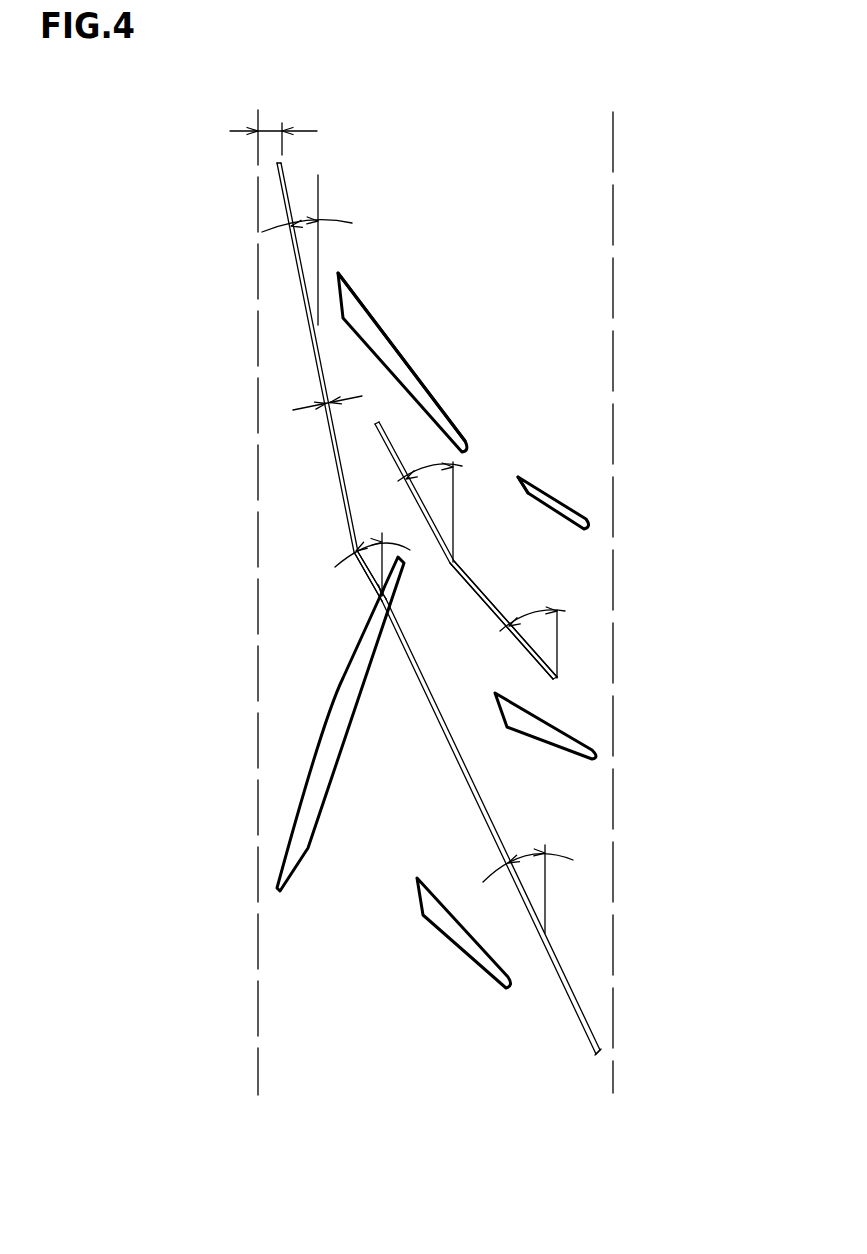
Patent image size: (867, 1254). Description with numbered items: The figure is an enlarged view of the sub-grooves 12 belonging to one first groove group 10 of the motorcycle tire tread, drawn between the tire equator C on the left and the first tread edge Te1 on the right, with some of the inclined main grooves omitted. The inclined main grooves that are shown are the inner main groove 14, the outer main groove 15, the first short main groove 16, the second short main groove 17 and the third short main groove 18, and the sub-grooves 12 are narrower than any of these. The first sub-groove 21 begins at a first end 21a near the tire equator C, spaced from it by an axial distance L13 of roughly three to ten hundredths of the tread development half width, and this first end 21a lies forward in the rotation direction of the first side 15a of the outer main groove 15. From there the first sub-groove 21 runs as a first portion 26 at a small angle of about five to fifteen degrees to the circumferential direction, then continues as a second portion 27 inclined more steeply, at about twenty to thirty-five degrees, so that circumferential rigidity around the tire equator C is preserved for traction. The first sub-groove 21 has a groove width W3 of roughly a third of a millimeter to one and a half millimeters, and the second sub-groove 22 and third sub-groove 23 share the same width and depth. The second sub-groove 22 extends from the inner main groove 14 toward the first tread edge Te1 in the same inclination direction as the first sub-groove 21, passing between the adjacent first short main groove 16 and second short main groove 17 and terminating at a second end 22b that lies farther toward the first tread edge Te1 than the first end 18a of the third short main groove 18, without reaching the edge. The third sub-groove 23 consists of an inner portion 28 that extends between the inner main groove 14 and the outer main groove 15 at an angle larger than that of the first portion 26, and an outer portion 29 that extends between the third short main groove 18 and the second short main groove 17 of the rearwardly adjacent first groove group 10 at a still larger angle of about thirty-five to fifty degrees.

The first groove group 10 is at (666, 611).
The sub-grooves 12 is at (286, 309).
The inner main groove 14 is at (328, 748).
The outer main groove 15 is at (375, 333).
The first side of outer main groove 15a is at (340, 272).
The first short main groove 16 is at (445, 915).
The second short main groove 17 is at (543, 732).
The third short main groove 18 is at (550, 500).
The first end of third short main groove 18a is at (516, 470).
The first sub-groove 21 is at (337, 468).
The first end of first sub-groove 21a is at (282, 162).
The second sub-groove 22 is at (488, 813).
The second end of second sub-groove 22b is at (600, 1053).
The third sub-groove 23 is at (392, 443).
The first portion 26 is at (254, 382).
The second portion 27 is at (367, 577).
The inner portion 28 is at (552, 482).
The outer portion 29 is at (492, 602).
The tire equator C is at (257, 588).
The first tread edge Te1 is at (610, 587).
The axial distance L13 is at (270, 130).
The groove width W3 is at (327, 403).